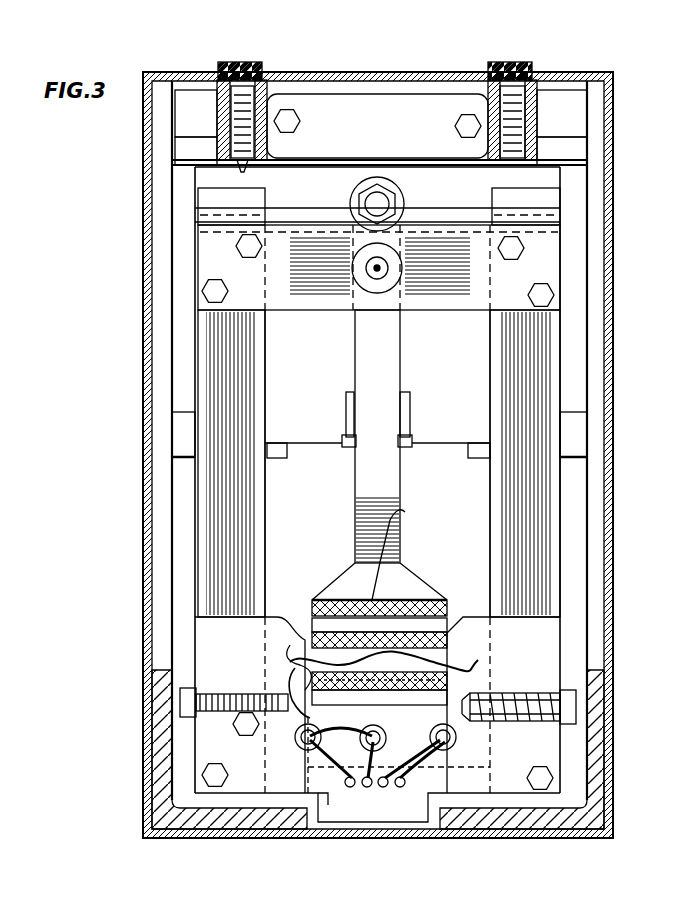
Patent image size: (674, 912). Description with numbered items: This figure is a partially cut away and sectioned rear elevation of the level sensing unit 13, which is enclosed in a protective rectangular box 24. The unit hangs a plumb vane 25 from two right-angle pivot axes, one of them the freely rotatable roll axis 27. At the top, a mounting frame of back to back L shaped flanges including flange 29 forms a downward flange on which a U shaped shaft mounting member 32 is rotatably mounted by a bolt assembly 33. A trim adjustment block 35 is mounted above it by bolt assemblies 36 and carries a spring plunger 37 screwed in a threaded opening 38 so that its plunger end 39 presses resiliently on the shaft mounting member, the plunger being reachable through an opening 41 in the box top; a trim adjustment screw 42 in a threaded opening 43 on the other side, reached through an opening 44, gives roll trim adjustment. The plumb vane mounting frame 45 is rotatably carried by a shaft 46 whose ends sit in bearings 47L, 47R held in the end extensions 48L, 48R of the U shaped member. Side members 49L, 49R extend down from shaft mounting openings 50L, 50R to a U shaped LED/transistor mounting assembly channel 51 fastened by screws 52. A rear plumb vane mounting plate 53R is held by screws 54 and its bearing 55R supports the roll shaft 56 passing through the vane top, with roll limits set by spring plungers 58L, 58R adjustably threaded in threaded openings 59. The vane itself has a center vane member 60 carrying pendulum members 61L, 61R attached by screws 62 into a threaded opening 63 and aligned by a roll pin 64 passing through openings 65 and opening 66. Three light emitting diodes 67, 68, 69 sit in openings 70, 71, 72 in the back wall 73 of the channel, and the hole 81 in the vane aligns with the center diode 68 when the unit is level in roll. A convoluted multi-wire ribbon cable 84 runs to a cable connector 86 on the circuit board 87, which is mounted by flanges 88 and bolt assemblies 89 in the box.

The level sensing unit 13 is at (148, 370).
The protective rectangular box 24 is at (632, 647).
The plumb vane 25 is at (392, 482).
The roll axis 27 is at (365, 255).
The L shaped flange 29 is at (313, 105).
The U shaped shaft mounting member 32 is at (344, 191).
The bolt assembly 33 is at (362, 185).
The trim adjustment block 35 is at (380, 112).
The bolt assemblies 36 is at (301, 124).
The spring plunger 37 is at (230, 163).
The threaded opening 38 is at (258, 138).
The plunger end 39 is at (246, 168).
The opening 41 is at (196, 113).
The trim adjustment screw 42 is at (530, 160).
The threaded opening 43 is at (500, 130).
The opening 44 is at (490, 86).
The plumb vane mounting frame 45 is at (562, 505).
The shaft 46 is at (430, 212).
The bearing 47L is at (178, 198).
The bearing 47R is at (585, 200).
The end extension 48L is at (178, 240).
The end extension 48R is at (582, 246).
The side member 49L is at (246, 373).
The side member 49R is at (545, 373).
The shaft mounting opening 50L is at (230, 257).
The shaft mounting opening 50R is at (527, 255).
The LED/transistor mounting assembly channel 51 is at (320, 799).
The screws 52 is at (240, 732).
The rear plumb vane mounting plate 53R is at (330, 312).
The screws 54 is at (228, 291).
The bearing 55R is at (437, 266).
The roll shaft 56 is at (366, 266).
The spring plunger 58L is at (218, 700).
The spring plunger 58R is at (512, 690).
The threaded openings 59 is at (236, 700).
The center vane member 60 is at (400, 372).
The pendulum member 61L is at (350, 575).
The pendulum member 61R is at (424, 598).
The screws 62 is at (302, 675).
The threaded opening 63 is at (435, 651).
The roll pin 64 is at (446, 630).
The openings 65 is at (326, 600).
The opening 66 is at (405, 550).
The light emitting diode 67 is at (296, 750).
The center light emitting diode 68 is at (348, 726).
The light emitting diode 69 is at (458, 741).
The opening 70 is at (302, 741).
The opening 71 is at (360, 749).
The opening 72 is at (452, 748).
The back wall 73 is at (454, 783).
The hole 81 is at (379, 700).
The convoluted multi-wire ribbon cable 84 is at (355, 493).
The cable connector 86 is at (340, 450).
The circuit board 87 is at (324, 378).
The flanges 88 is at (175, 96).
The bolt assemblies 89 is at (344, 433).